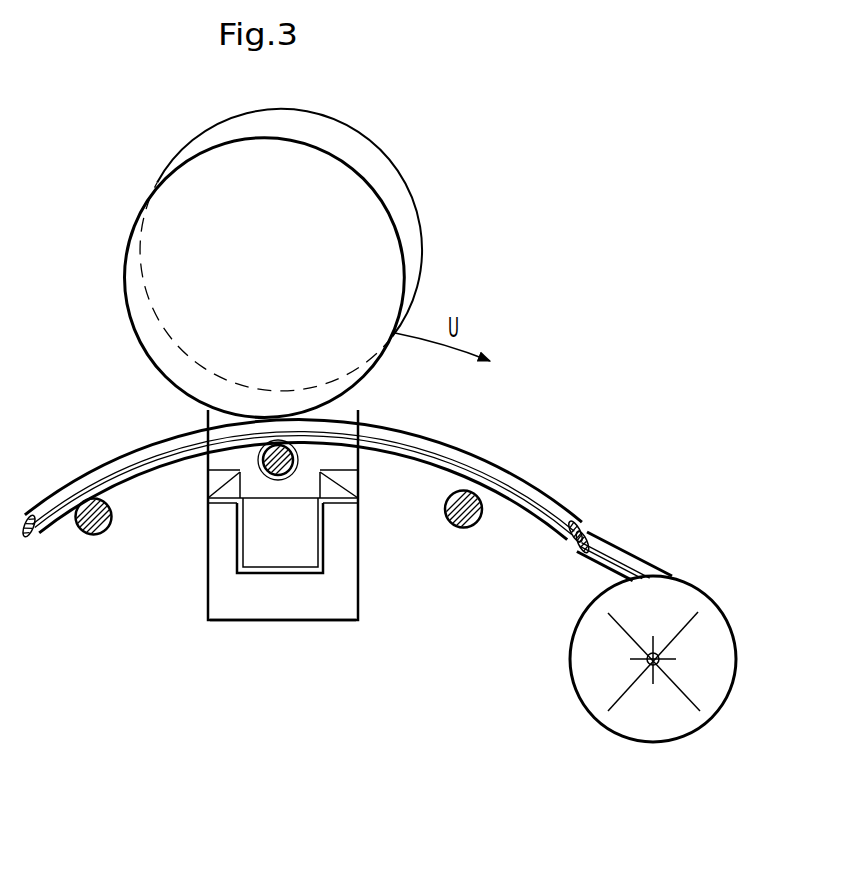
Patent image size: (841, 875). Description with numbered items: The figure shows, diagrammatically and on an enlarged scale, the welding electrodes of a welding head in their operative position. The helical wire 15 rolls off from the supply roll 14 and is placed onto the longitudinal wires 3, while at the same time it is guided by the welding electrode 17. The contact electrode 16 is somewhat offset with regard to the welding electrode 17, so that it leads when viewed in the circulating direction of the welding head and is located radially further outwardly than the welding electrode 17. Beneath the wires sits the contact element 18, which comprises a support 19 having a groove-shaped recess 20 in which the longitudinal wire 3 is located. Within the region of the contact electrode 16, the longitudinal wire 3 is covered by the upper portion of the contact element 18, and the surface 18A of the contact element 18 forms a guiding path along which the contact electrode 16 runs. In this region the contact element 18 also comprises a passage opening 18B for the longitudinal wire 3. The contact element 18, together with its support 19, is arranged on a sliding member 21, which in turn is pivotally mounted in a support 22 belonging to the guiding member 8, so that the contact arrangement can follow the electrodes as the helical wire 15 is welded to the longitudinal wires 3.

The longitudinal wire 3 is at (92, 534).
The guiding member 8 is at (202, 564).
The supply roll 14 is at (680, 598).
The helical wire 15 is at (78, 480).
The contact electrode 16 is at (420, 258).
The welding electrode 17 is at (133, 228).
The contact element 18 is at (382, 445).
The surface of the contact element 18A is at (342, 398).
The passage opening 18B is at (320, 443).
The support 19 is at (258, 490).
The groove-shaped recess 20 is at (320, 477).
The sliding member 21 is at (312, 542).
The support 22 is at (343, 602).